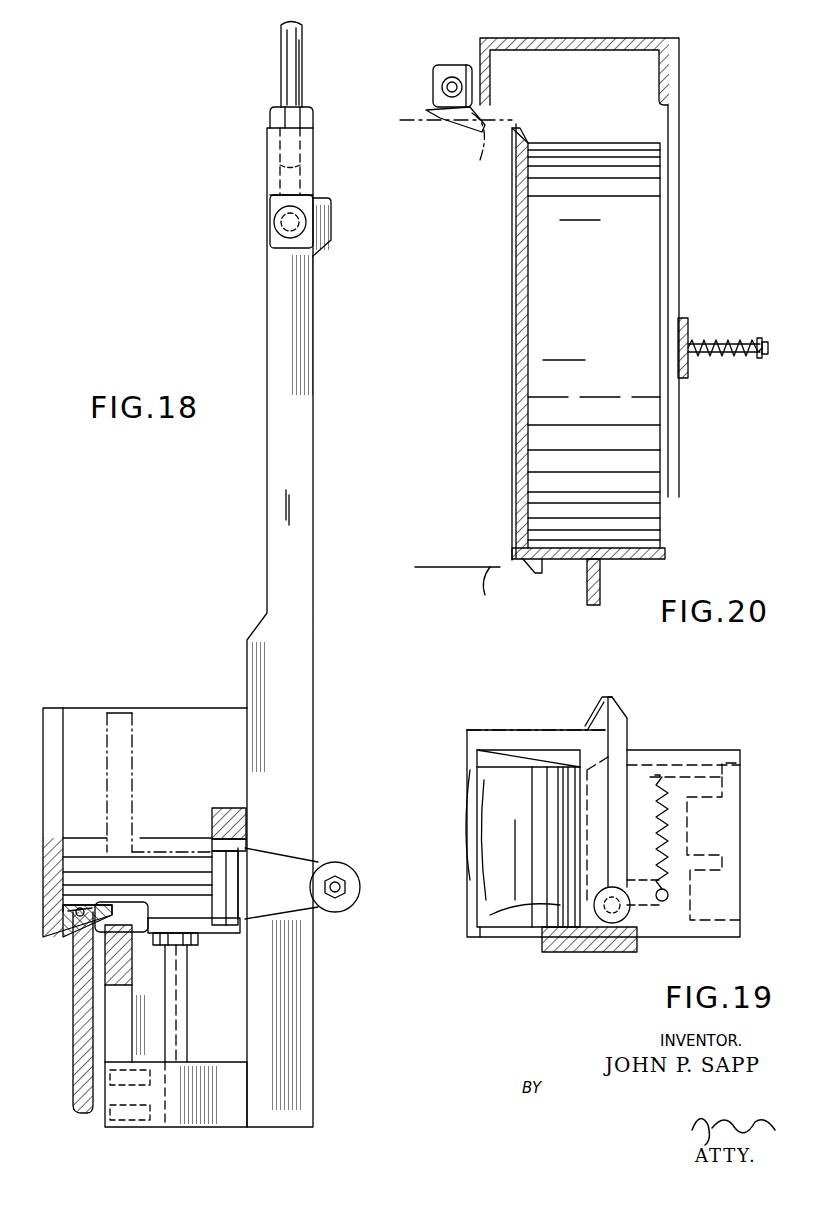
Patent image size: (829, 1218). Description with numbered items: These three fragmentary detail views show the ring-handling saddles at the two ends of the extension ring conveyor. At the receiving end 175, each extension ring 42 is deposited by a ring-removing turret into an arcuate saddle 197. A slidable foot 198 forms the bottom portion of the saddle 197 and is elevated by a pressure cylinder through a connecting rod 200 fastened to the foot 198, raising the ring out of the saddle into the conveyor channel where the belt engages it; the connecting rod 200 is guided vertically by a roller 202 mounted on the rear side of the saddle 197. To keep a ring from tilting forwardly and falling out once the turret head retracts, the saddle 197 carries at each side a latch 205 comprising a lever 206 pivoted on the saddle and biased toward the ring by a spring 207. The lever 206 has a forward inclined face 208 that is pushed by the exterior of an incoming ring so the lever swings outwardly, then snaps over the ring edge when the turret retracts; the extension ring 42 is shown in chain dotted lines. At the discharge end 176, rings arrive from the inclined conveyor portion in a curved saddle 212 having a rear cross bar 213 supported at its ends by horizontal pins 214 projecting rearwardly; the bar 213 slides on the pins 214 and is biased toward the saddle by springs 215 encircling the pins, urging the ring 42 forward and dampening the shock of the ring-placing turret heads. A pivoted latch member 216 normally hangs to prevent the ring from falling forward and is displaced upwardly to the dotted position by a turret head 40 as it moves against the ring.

In FIG. 18, the connecting rod 200 is at (277, 367).
In FIG. 18, the receiving end 175 is at (168, 690).
In FIG. 18, the slidable foot 198 is at (120, 713).
In FIG. 18, the arcuate saddle 197 is at (80, 915).
In FIG. 18, the roller 202 is at (338, 862).
In FIG. 20, the discharge end 176 is at (684, 520).
In FIG. 20, the extension ring 42 is at (514, 385).
In FIG. 19, the extension ring 42 is at (520, 730).
In FIG. 20, the curved saddle 212 is at (582, 548).
In FIG. 20, the rear cross bar 213 is at (679, 355).
In FIG. 20, the horizontal pins 214 is at (718, 352).
In FIG. 20, the springs 215 is at (718, 345).
In FIG. 20, the pivoted latch member 216 is at (480, 148).
In FIG. 20, the turret head 40 is at (459, 592).
In FIG. 19, the latch 205 is at (640, 732).
In FIG. 19, the lever 206 is at (618, 770).
In FIG. 19, the spring 207 is at (641, 857).
In FIG. 19, the forward inclined face 208 is at (595, 724).